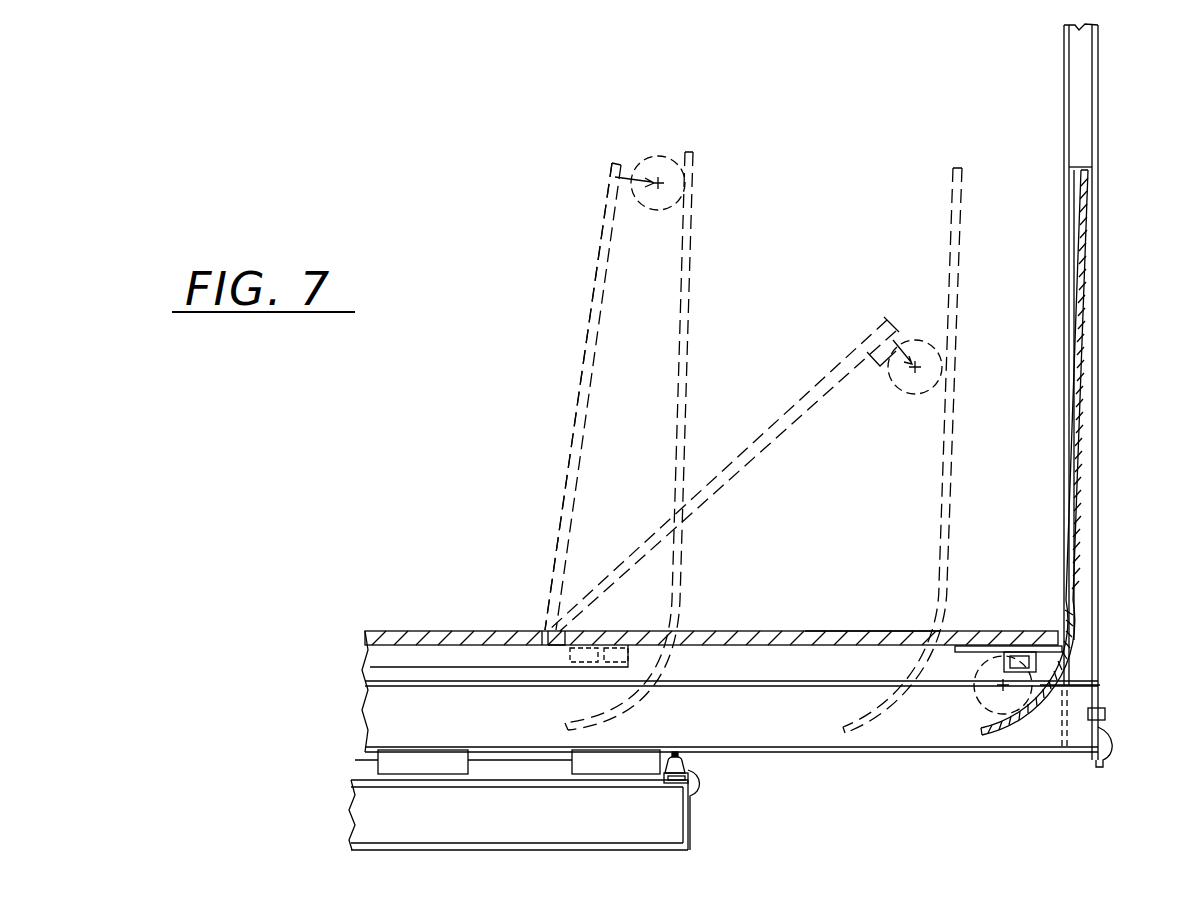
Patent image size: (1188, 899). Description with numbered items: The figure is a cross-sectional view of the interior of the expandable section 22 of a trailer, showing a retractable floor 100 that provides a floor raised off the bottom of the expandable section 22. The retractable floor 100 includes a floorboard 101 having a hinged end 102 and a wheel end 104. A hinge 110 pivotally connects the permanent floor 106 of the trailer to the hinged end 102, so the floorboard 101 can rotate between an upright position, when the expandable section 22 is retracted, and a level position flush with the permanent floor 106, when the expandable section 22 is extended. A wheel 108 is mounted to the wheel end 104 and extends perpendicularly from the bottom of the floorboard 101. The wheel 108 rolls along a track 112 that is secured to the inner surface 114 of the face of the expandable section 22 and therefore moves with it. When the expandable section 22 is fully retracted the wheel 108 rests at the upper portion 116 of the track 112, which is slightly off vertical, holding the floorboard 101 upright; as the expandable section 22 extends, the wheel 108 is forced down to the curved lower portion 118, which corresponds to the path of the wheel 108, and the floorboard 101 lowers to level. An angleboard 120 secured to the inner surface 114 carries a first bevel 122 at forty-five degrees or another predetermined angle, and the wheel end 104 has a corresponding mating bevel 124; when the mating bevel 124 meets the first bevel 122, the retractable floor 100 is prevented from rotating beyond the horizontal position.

The expandable section 22 is at (1098, 342).
The retractable floor 100 is at (560, 340).
The floorboard 101 is at (600, 290).
The hinged end 102 is at (545, 630).
The wheel end 104 is at (880, 340).
The permanent floor 106 is at (432, 630).
The wheel 108 is at (655, 157).
The hinge 110 is at (545, 645).
The track 112 is at (1064, 285).
The inner surface 114 is at (1066, 115).
The upper portion 116 is at (1075, 218).
The lower portion 118 is at (1000, 725).
The angleboard 120 is at (1068, 626).
The first bevel 122 is at (1055, 648).
The mating bevel 124 is at (1012, 652).